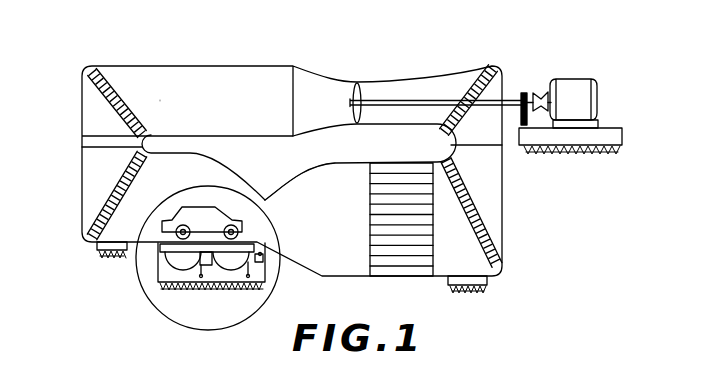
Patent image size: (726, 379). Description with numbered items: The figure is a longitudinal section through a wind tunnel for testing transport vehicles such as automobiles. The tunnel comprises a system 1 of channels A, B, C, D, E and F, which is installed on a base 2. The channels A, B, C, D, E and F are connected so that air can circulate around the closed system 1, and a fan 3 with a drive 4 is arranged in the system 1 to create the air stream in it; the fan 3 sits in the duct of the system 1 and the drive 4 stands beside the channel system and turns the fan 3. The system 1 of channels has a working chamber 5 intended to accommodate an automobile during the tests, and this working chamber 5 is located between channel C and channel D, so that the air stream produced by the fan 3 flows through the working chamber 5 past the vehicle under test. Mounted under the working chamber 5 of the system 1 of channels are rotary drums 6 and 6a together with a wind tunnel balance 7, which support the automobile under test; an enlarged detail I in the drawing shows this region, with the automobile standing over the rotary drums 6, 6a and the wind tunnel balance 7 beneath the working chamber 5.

The system of channels 1 is at (253, 54).
The channel A is at (178, 80).
The channel B is at (82, 131).
The channel C is at (97, 246).
The channel D is at (356, 262).
The channel E is at (503, 195).
The channel F is at (438, 86).
The base 2 is at (485, 290).
The fan 3 is at (361, 90).
The drive 4 is at (575, 86).
The working chamber 5 is at (243, 176).
The rotary drum 6 is at (168, 270).
The rotary drum 6a is at (249, 277).
The wind tunnel balance 7 is at (271, 268).
The detail circle I is at (160, 323).